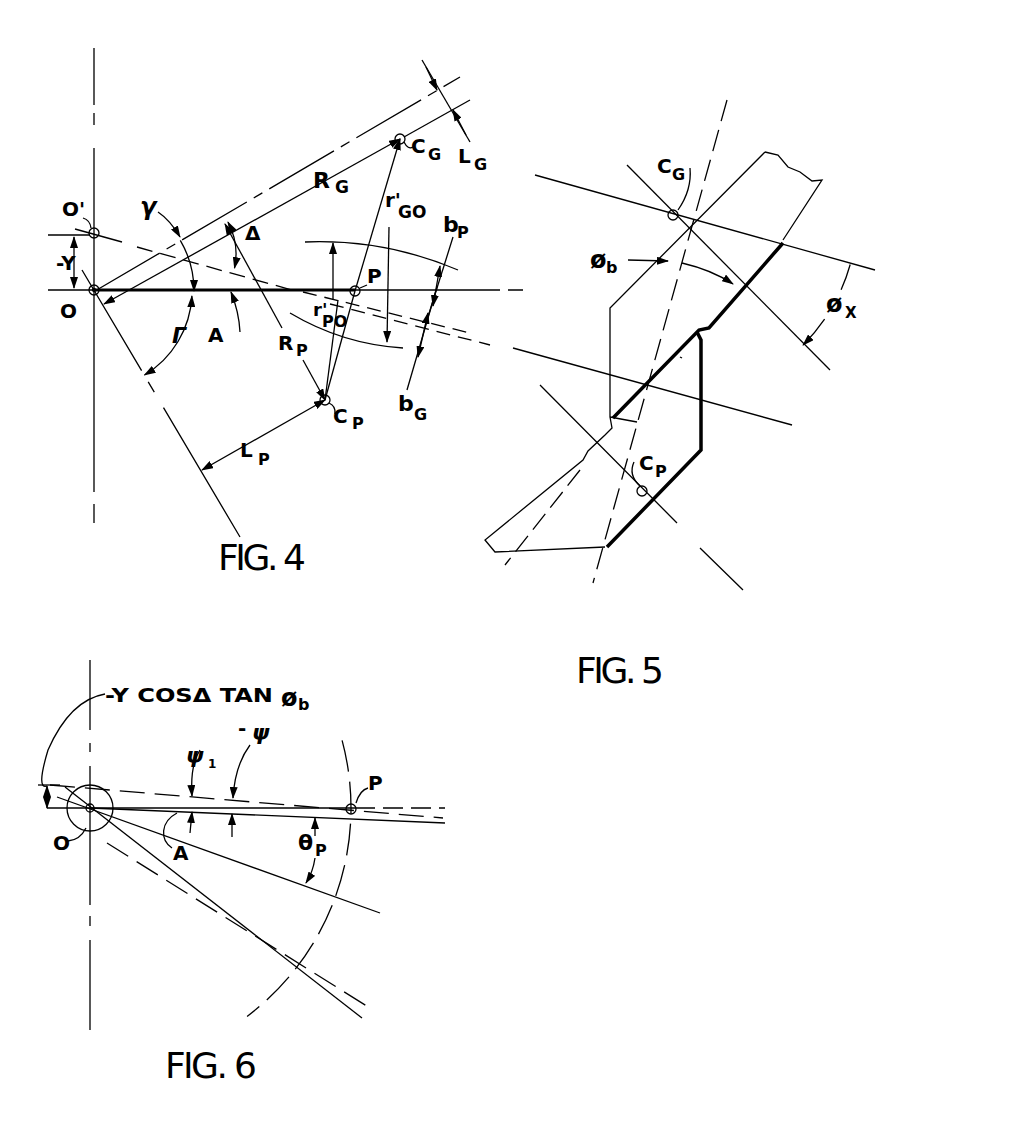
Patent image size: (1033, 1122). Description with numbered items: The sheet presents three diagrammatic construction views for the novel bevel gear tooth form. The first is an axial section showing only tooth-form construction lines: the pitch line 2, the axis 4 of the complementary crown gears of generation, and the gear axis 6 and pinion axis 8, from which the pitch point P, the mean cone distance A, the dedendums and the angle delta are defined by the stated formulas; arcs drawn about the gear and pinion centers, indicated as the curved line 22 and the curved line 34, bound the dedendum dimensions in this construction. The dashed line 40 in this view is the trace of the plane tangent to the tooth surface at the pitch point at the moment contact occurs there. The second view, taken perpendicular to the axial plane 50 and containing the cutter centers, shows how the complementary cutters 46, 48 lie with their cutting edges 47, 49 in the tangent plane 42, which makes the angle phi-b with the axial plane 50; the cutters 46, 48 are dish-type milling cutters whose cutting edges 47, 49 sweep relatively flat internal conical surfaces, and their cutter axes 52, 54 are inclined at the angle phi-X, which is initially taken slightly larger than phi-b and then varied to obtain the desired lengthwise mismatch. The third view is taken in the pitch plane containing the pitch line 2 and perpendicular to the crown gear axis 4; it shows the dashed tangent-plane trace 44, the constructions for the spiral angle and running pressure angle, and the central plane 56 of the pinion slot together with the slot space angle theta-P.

In FIG. 4, the pitch line 2 is at (458, 291).
In FIG. 4, the axis of the complementary crown gears of generation 4 is at (94, 68).
In FIG. 4, the gear axis 6 is at (220, 497).
In FIG. 4, the pinion axis 8 is at (348, 143).
In FIG. 4, the gear tooth surface 22 is at (367, 242).
In FIG. 4, the pinion tooth surface 34 is at (349, 343).
In FIG. 4, the trace of the tangent plane 40 is at (296, 262).
In FIG. 5, the tangent plane 42 is at (829, 178).
In FIG. 6, the trace of the tangent plane 44 is at (257, 803).
In FIG. 5, the cutter 46 is at (637, 327).
In FIG. 5, the cutting edge 47 is at (678, 358).
In FIG. 5, the cutter 48 is at (678, 428).
In FIG. 5, the cutting edge 49 is at (637, 406).
In FIG. 5, the axial plane 50 is at (713, 148).
In FIG. 5, the cutter axis 52 is at (620, 160).
In FIG. 5, the cutter axis 54 is at (683, 535).
In FIG. 6, the central plane of the pinion slot 56 is at (316, 891).